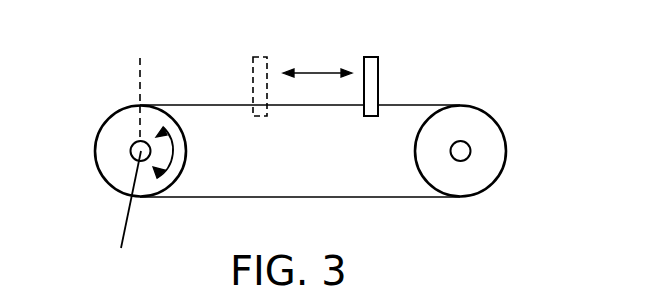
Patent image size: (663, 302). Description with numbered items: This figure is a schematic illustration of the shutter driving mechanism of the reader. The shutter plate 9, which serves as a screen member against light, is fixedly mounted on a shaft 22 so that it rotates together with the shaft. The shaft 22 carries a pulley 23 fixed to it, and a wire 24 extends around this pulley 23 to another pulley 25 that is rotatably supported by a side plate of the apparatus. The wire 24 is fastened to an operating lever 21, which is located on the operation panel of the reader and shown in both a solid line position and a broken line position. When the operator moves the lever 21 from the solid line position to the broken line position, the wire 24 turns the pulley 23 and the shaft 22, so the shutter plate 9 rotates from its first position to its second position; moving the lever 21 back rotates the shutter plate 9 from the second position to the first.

The shutter plate 9 is at (122, 229).
The operating lever 21 is at (372, 57).
The shaft 22 is at (131, 145).
The pulley 23 is at (102, 164).
The wire 24 is at (367, 198).
The pulley 25 is at (493, 172).